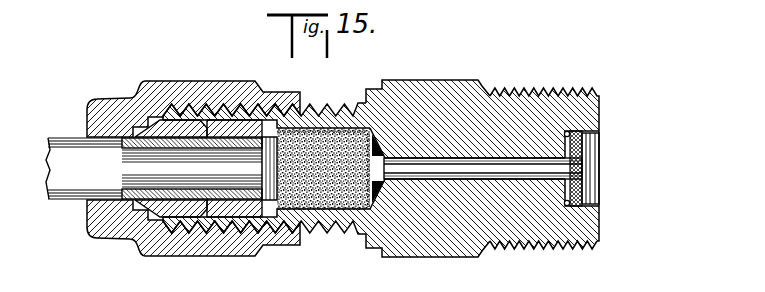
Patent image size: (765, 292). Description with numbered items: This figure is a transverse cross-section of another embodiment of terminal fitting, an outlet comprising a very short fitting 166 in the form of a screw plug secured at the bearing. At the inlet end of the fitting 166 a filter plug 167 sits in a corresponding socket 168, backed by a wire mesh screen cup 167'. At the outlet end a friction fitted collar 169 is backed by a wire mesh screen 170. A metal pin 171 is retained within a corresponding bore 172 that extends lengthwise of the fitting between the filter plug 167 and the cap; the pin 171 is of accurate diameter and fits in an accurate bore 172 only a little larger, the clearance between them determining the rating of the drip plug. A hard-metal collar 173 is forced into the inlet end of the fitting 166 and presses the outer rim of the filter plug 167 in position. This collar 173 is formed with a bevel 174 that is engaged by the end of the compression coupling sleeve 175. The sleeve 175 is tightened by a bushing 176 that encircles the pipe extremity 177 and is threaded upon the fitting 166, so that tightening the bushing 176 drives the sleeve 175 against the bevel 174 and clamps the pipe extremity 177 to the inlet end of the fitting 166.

The fitting 166 is at (517, 102).
The filter plug 167 is at (323, 136).
The wire mesh screen cup 167' is at (379, 207).
The socket 168 is at (375, 140).
The friction fitted collar 169 is at (582, 145).
The wire mesh screen 170 is at (578, 185).
The metal pin 171 is at (458, 173).
The bore 172 is at (440, 157).
The hard-metal collar 173 is at (271, 146).
The bevel 174 is at (220, 212).
The compression coupling sleeve 175 is at (164, 128).
The bushing 176 is at (173, 245).
The pipe extremity 177 is at (57, 147).